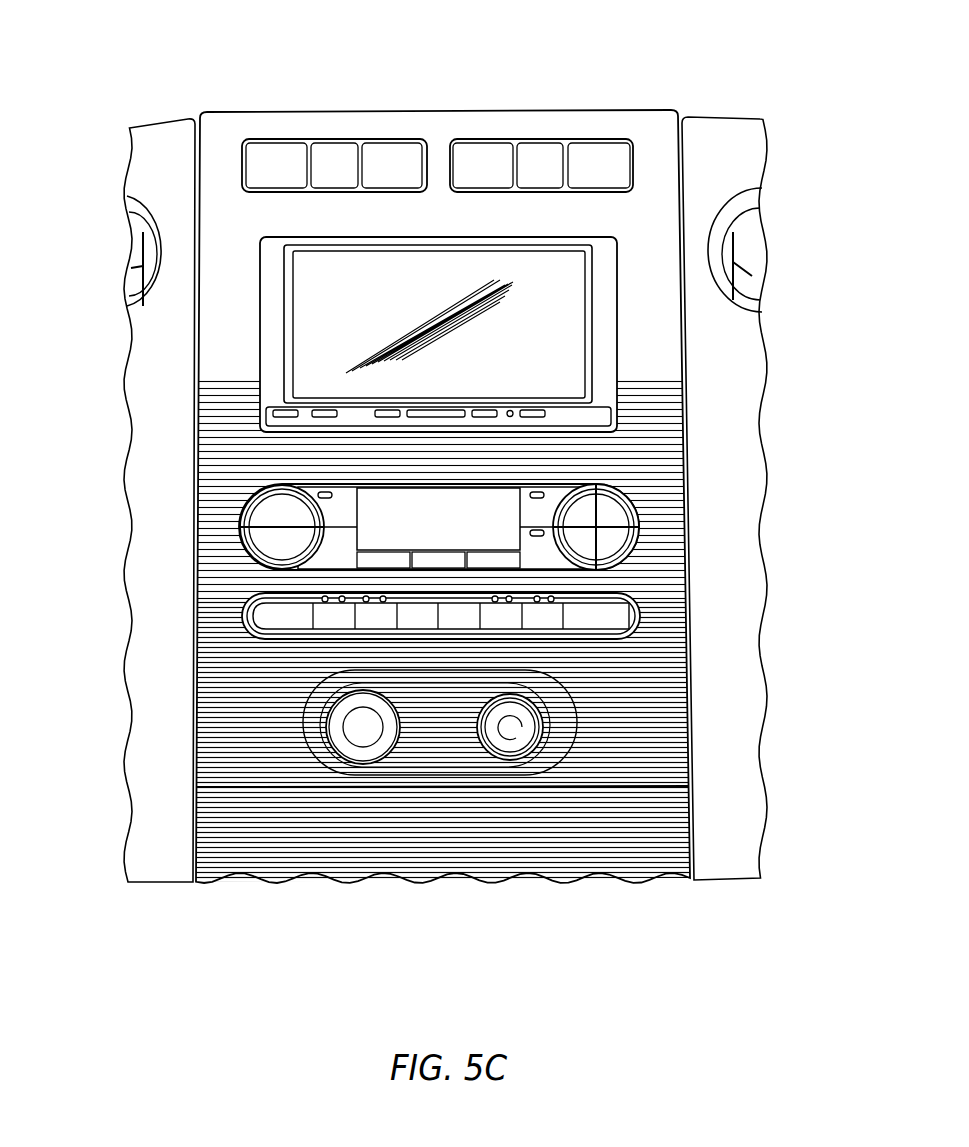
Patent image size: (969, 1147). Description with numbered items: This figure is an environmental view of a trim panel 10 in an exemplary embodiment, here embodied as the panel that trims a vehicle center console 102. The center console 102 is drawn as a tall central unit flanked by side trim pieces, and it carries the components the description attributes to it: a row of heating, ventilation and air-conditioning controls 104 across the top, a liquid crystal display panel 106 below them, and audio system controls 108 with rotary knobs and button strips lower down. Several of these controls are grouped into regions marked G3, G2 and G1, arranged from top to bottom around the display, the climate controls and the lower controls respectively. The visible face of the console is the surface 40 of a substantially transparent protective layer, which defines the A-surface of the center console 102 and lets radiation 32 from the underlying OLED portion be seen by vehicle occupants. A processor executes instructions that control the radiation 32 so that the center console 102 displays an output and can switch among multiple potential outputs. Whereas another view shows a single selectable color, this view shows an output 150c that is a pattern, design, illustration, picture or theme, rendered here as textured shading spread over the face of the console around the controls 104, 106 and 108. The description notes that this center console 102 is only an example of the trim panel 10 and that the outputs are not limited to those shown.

The trim panel 10 is at (548, 80).
The radiation 32 is at (536, 500).
The pattern output 150c is at (642, 213).
The center console 102 is at (437, 128).
The heating ventilation and air-conditioning controls 104 is at (607, 162).
The surface 40 is at (634, 265).
The display group G3 is at (550, 316).
The liquid crystal display panel 106 is at (598, 378).
The climate control group G2 is at (635, 455).
The audio system controls 108 is at (612, 546).
The lower control group G1 is at (635, 683).